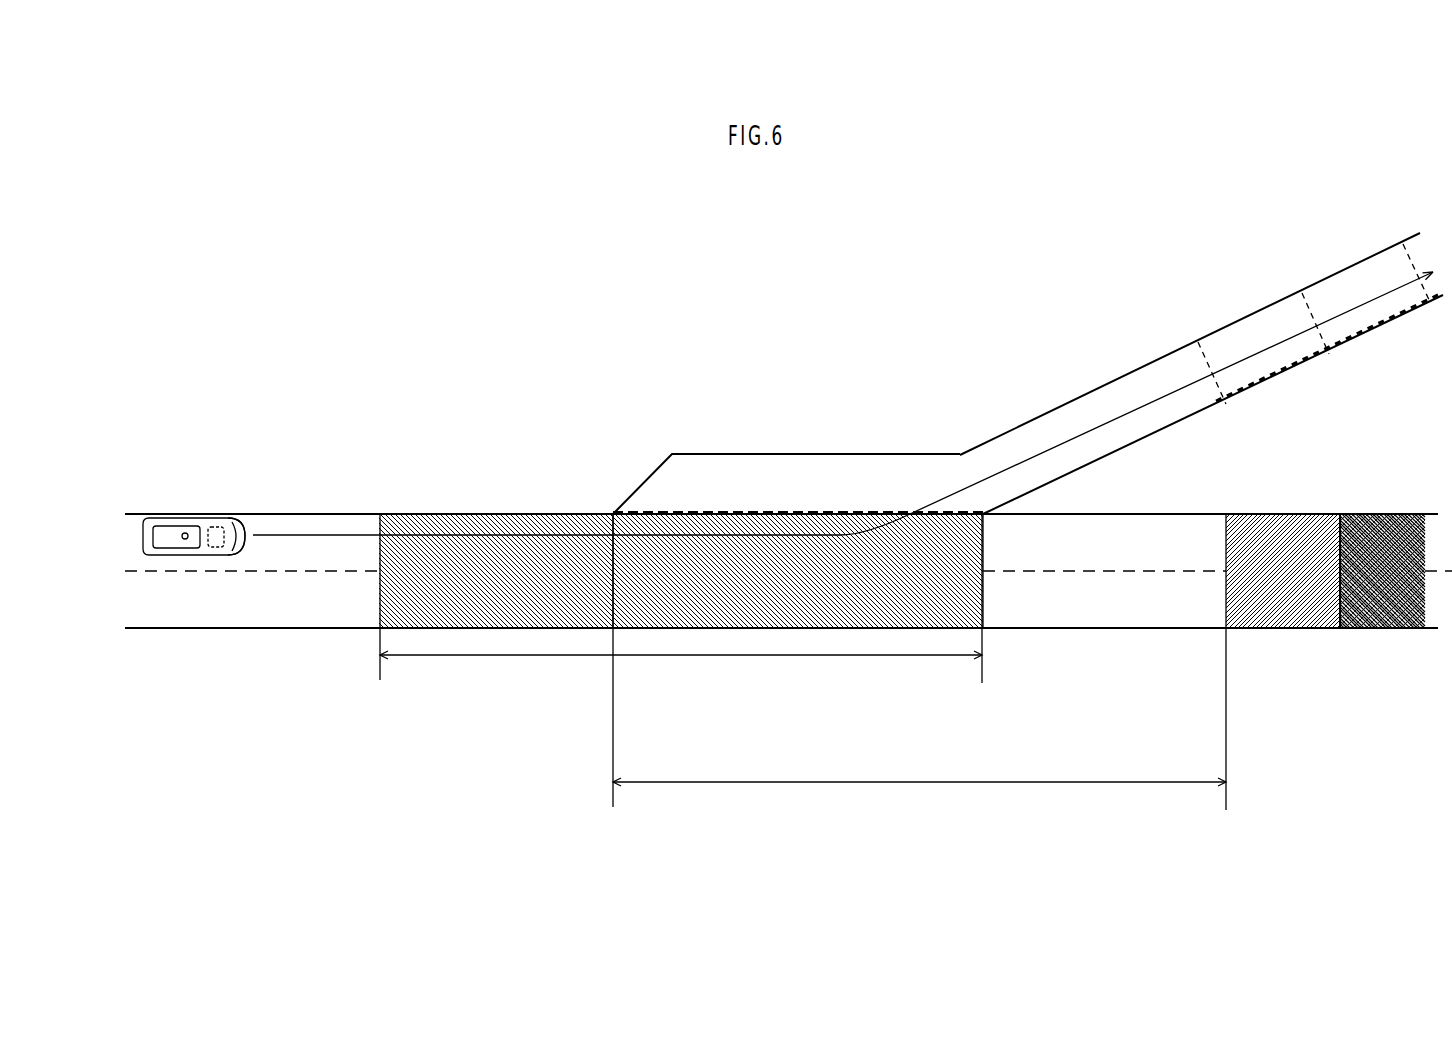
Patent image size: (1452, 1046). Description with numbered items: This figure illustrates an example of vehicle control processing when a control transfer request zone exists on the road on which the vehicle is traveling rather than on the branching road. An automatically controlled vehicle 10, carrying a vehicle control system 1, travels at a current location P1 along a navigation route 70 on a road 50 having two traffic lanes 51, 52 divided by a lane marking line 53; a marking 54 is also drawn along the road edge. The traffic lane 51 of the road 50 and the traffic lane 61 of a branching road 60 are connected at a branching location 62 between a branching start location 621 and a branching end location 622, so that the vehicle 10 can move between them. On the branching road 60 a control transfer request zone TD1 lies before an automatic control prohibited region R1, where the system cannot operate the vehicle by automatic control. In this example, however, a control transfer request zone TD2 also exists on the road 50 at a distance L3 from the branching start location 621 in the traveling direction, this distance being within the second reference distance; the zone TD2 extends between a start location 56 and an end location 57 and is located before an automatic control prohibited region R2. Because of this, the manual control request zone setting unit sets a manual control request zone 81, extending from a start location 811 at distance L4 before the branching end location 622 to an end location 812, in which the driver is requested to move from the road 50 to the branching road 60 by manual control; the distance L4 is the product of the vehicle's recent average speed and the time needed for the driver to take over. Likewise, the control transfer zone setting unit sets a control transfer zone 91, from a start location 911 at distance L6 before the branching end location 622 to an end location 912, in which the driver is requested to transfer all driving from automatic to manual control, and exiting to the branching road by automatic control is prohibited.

The automatically controlled vehicle 10 is at (165, 520).
The current location P1 is at (183, 530).
The vehicle control system 1 is at (215, 520).
The navigation route 70 is at (297, 535).
The road 50 is at (367, 513).
The traffic lane 51 is at (1176, 557).
The traffic lane 52 is at (1176, 616).
The lane marking line 53 is at (1077, 570).
The road edge marking 54 is at (700, 514).
The start location 56 is at (1226, 514).
The end location 57 is at (1340, 514).
The branching road 60 is at (1058, 405).
The traffic lane 61 is at (858, 497).
The branching location 62 is at (763, 452).
The branching start location 621 is at (610, 512).
The branching end location 622 is at (985, 525).
The manual control request zone 81 is at (388, 590).
The control transfer zone 91 is at (217, 708).
The start location 811 is at (376, 616).
The start location 911 is at (373, 731).
The end location 812 is at (976, 617).
The end location 912 is at (975, 733).
The control transfer request zone TD1 is at (1252, 327).
The control transfer request zone TD2 is at (1288, 540).
The automatic control prohibited region R1 is at (1375, 262).
The automatic control prohibited region R2 is at (1408, 540).
The distance L3 is at (919, 665).
The distance L4 is at (681, 670).
The distance L6 is at (683, 701).